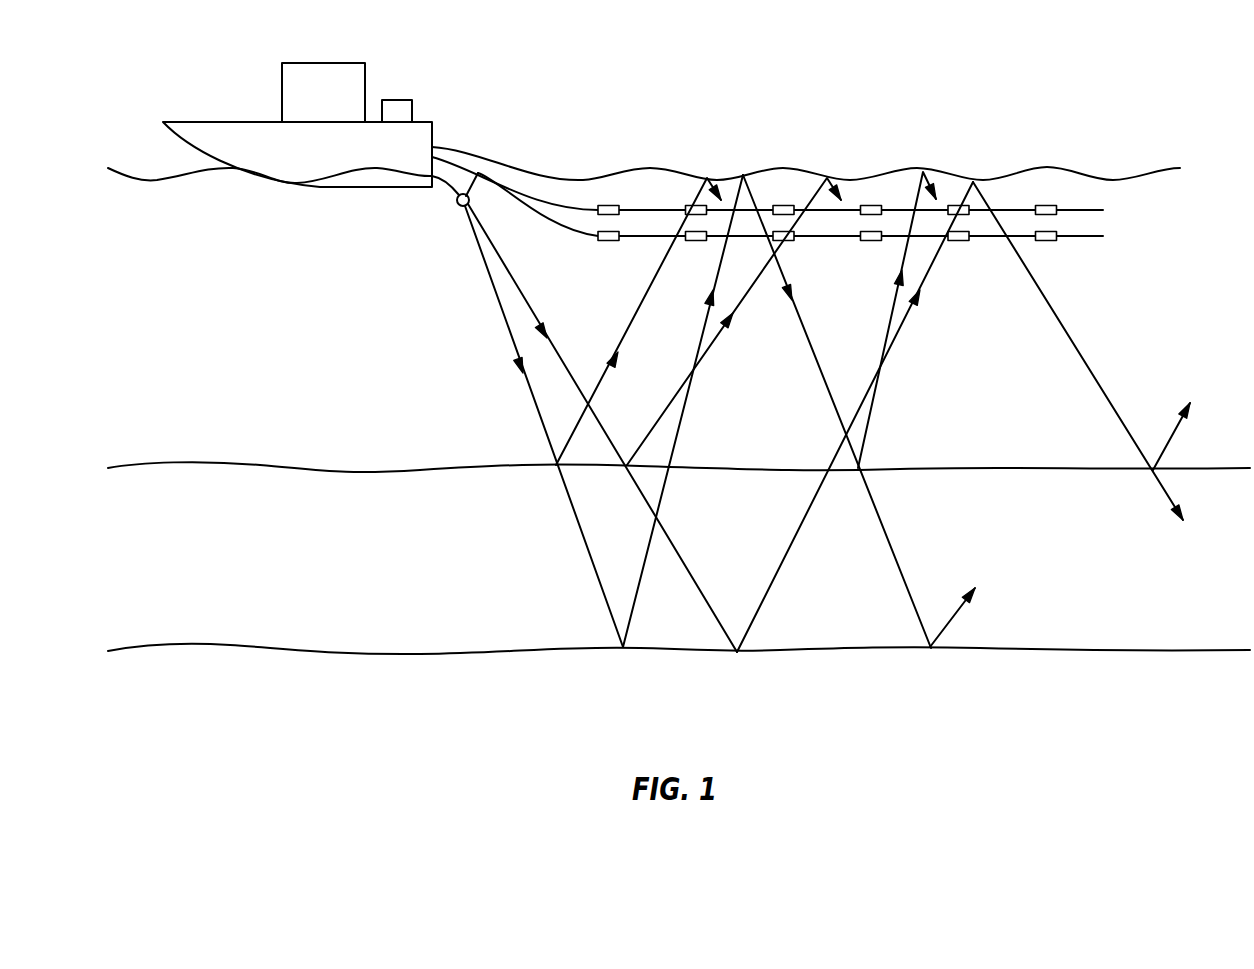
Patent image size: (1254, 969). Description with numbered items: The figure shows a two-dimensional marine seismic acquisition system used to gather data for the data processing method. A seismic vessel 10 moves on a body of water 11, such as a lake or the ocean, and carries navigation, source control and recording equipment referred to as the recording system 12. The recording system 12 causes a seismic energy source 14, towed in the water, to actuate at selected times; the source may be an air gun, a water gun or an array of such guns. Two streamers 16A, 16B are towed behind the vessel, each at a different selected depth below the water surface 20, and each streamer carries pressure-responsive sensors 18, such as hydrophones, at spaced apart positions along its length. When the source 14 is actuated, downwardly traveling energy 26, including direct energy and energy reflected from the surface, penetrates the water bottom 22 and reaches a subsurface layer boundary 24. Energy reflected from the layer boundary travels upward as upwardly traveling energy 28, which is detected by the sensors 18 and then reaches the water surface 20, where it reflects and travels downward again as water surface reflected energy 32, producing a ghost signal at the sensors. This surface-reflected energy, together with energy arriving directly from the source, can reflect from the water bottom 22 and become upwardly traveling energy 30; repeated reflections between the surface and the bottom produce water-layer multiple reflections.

The seismic vessel 10 is at (433, 130).
The body of water 11 is at (369, 329).
The recording system 12 is at (396, 100).
The seismic energy source 14 is at (460, 206).
The streamer 16A is at (1002, 208).
The streamer 16B is at (1000, 243).
The pressure-responsive sensors 18 is at (605, 206).
The water surface 20 is at (647, 169).
The water bottom 22 is at (263, 465).
The subsurface layer boundary 24 is at (263, 648).
The downwardly traveling energy 26 is at (530, 303).
The upwardly traveling energy 28 is at (683, 422).
The upwardly traveling energy reflected from water bottom 30 is at (631, 325).
The water surface reflected energy 32 is at (819, 368).